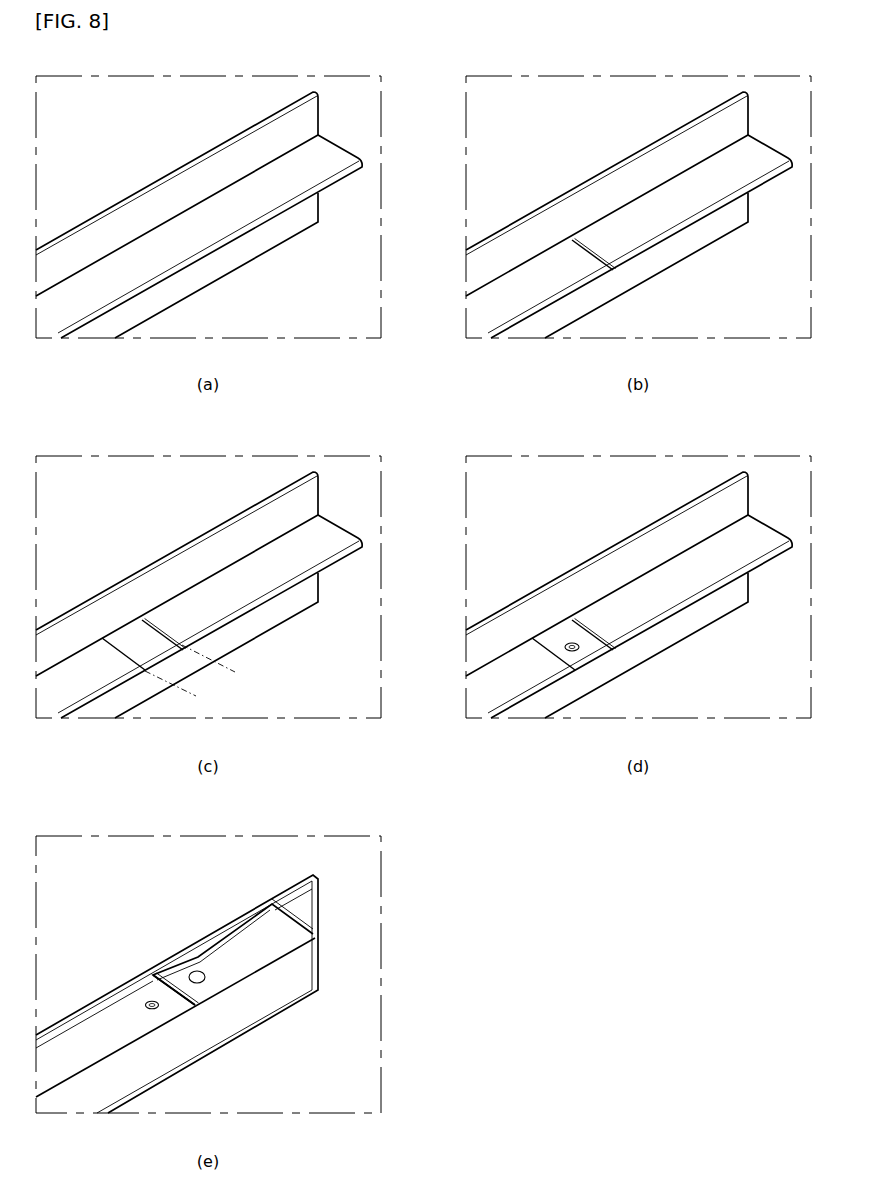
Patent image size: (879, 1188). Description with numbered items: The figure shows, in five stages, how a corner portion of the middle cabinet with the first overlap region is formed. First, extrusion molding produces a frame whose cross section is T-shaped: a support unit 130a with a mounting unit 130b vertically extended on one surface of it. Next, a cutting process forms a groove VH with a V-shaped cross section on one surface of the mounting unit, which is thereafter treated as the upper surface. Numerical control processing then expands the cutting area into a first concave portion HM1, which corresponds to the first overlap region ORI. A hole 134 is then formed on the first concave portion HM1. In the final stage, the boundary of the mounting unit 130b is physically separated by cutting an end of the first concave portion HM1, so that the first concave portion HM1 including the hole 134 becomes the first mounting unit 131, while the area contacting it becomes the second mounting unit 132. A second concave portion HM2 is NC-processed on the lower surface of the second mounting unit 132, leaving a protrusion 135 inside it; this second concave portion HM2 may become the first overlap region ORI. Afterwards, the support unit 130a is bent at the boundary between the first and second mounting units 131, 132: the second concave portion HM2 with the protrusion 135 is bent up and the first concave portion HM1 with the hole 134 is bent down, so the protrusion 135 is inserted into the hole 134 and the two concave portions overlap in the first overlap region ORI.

The support unit 130a is at (392, 602).
The mounting unit 130b is at (419, 426).
The groove VH is at (597, 240).
The first concave portion HM1 is at (134, 640).
The first overlap region ORI is at (192, 676).
The hole 134 is at (363, 818).
The first mounting unit 131 is at (102, 1018).
The second mounting unit 132 is at (232, 953).
The protrusion 135 is at (200, 984).
The second concave portion HM2 is at (218, 981).